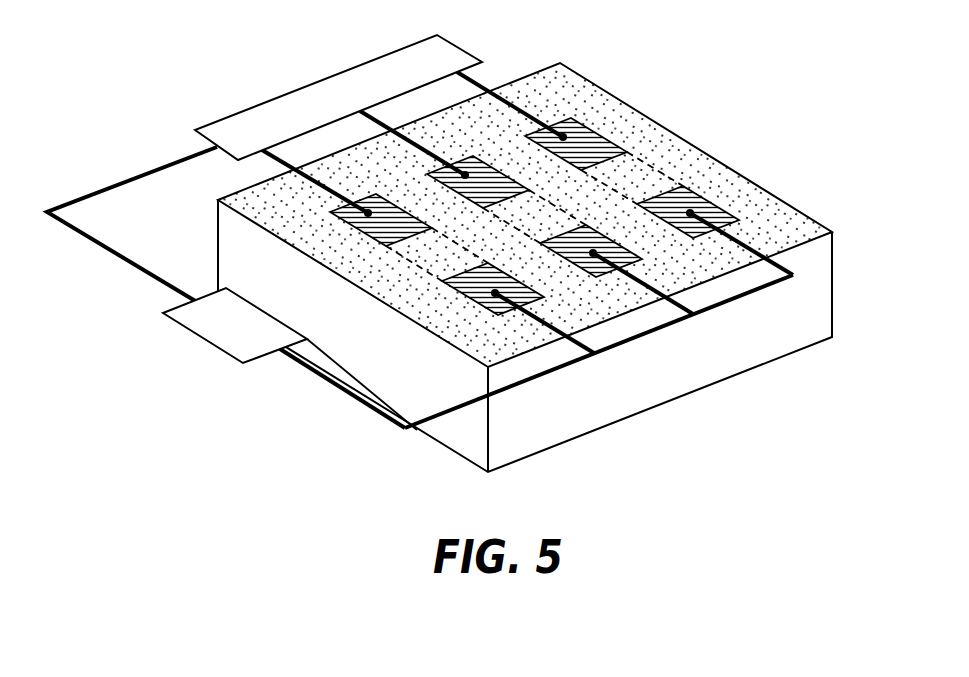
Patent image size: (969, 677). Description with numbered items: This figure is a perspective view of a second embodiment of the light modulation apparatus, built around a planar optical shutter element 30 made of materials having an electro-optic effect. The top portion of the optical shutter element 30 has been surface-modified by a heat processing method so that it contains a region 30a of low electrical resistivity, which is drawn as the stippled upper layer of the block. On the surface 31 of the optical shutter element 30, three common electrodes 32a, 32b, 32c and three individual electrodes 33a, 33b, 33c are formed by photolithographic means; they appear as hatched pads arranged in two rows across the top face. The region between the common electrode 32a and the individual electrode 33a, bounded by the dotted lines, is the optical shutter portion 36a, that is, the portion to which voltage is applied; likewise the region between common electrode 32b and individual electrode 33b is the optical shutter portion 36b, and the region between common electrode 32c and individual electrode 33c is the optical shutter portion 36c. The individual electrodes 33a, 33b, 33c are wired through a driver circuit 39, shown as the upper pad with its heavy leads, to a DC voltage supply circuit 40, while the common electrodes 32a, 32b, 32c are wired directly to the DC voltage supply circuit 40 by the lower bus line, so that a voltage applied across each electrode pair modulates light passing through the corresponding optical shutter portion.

The optical shutter element 30 is at (720, 365).
The region of low electrical resistivity 30a is at (823, 243).
The surface 31 is at (707, 167).
The common electrode 32a is at (697, 210).
The common electrode 32b is at (604, 255).
The common electrode 32c is at (503, 290).
The individual electrode 33a is at (568, 132).
The individual electrode 33b is at (472, 168).
The individual electrode 33c is at (372, 208).
The optical shutter portion 36a is at (633, 170).
The optical shutter portion 36b is at (538, 212).
The optical shutter portion 36c is at (438, 250).
The driver circuit 39 is at (332, 88).
The DC voltage supply circuit 40 is at (217, 330).